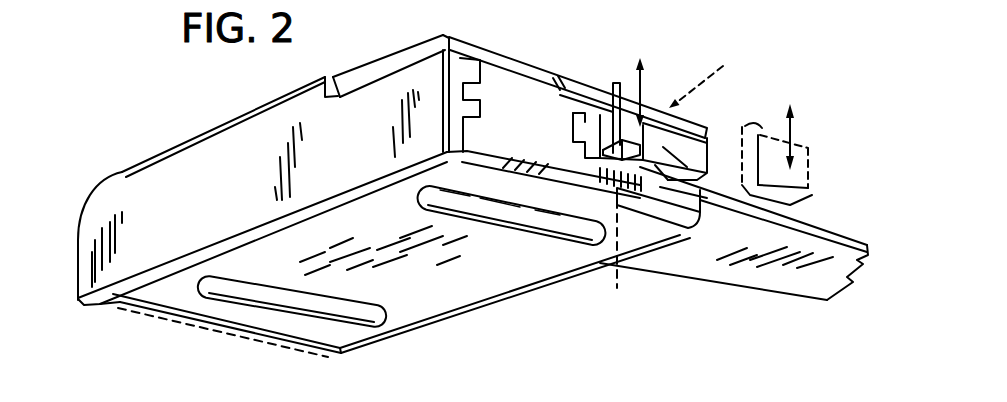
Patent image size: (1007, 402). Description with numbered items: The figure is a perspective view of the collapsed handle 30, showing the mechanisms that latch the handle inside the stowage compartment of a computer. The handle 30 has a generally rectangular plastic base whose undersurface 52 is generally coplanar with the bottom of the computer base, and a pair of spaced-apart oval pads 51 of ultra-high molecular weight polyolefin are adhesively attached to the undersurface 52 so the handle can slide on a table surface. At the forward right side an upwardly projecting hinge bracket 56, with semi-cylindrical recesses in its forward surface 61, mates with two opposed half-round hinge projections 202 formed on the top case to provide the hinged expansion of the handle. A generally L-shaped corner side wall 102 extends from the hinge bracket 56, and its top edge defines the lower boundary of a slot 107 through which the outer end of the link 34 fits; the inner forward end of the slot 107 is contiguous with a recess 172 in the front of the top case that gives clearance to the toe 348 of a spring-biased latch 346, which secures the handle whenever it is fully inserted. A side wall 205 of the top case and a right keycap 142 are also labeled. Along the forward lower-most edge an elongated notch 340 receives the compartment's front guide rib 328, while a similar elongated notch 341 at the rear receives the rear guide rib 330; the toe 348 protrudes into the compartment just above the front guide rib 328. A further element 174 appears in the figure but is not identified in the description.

The handle 30 is at (82, 188).
The link 34 is at (825, 222).
The pads 51 is at (248, 294).
The undersurface 52 is at (452, 270).
The hinge bracket 56 is at (527, 78).
The forward surface 61 is at (525, 112).
The corner side wall 102 is at (655, 190).
The slot 107 is at (670, 170).
The right keycap 142 is at (365, 62).
The recess 172 is at (611, 138).
The latch post 174 is at (644, 168).
The hinge projections 202 is at (473, 100).
The side wall 205 is at (148, 171).
The front guide rib 328 is at (623, 260).
The rear guide rib 330 is at (270, 342).
The elongated notch 340 is at (690, 222).
The elongated notch 341 is at (137, 306).
The spring-biased latch 346 is at (718, 76).
The toe 348 is at (767, 151).